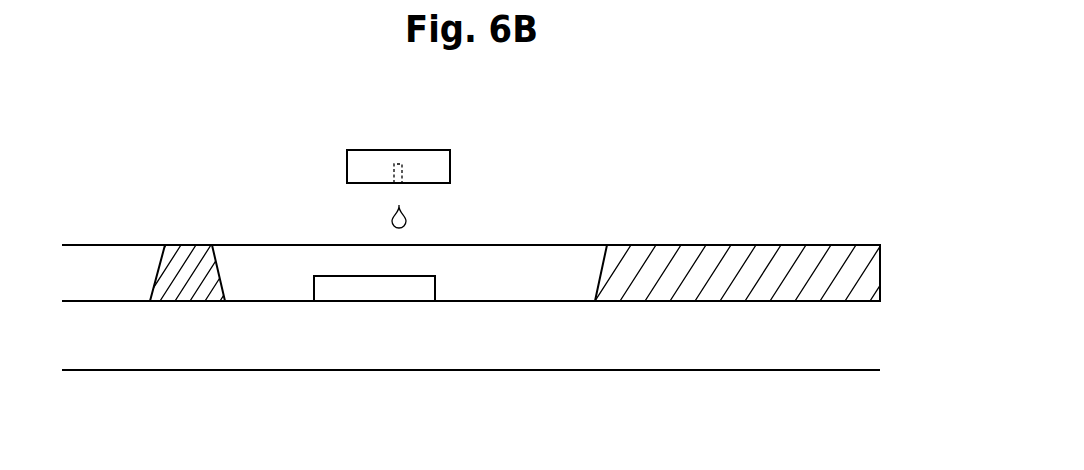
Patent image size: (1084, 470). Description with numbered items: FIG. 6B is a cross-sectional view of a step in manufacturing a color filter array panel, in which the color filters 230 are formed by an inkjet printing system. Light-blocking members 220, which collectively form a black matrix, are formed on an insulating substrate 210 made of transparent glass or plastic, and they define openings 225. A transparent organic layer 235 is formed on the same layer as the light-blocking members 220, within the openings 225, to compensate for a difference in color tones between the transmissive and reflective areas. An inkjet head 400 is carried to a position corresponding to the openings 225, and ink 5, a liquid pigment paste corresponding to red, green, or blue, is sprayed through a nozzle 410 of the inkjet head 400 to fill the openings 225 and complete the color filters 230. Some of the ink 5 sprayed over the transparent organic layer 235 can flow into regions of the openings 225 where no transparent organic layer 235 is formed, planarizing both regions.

The ink 5 is at (406, 219).
The insulating substrate 210 is at (676, 366).
The light-blocking member 220 is at (687, 262).
The opening 225 is at (222, 271).
The color filter 230 is at (548, 262).
The transparent organic layer 235 is at (327, 276).
The inkjet head 400 is at (450, 167).
The nozzle 410 is at (400, 164).